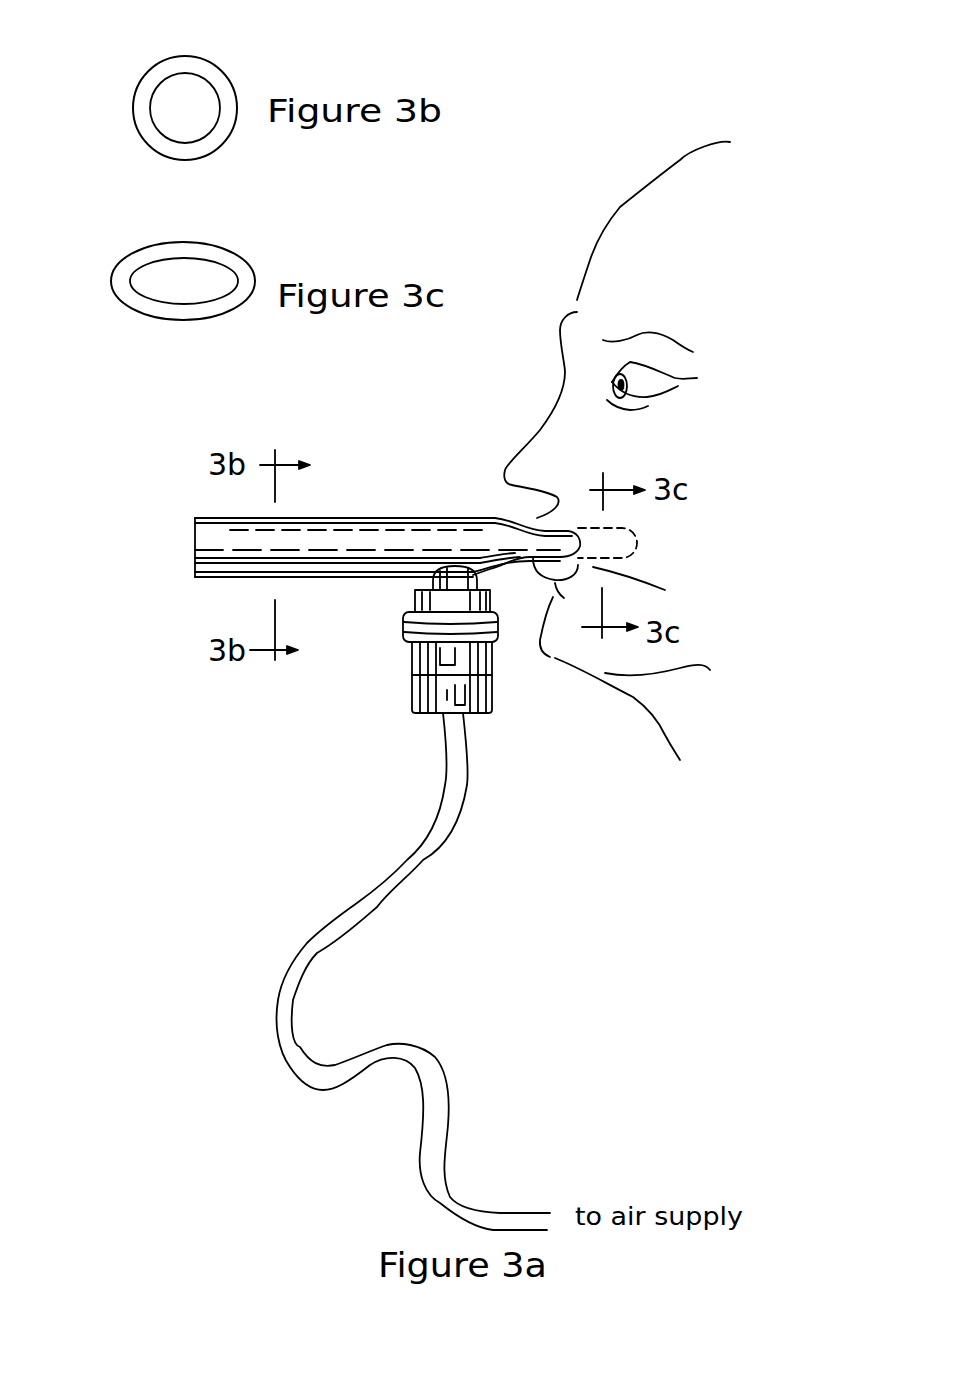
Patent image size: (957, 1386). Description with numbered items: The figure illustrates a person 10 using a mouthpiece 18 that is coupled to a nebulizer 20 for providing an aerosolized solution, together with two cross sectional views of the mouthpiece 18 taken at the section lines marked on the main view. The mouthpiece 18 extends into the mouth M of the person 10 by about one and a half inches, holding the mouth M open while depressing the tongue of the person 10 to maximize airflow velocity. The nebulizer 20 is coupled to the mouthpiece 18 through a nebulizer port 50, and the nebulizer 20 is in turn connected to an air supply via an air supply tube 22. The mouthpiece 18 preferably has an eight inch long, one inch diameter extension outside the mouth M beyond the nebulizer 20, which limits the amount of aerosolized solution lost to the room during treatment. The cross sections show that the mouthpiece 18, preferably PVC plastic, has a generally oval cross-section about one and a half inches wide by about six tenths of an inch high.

The person 10 is at (650, 160).
The mouthpiece 18 is at (263, 583).
The nebulizer port 50 is at (433, 582).
The nebulizer 20 is at (405, 683).
The air supply tube 22 is at (392, 877).
The mouth M is at (685, 602).